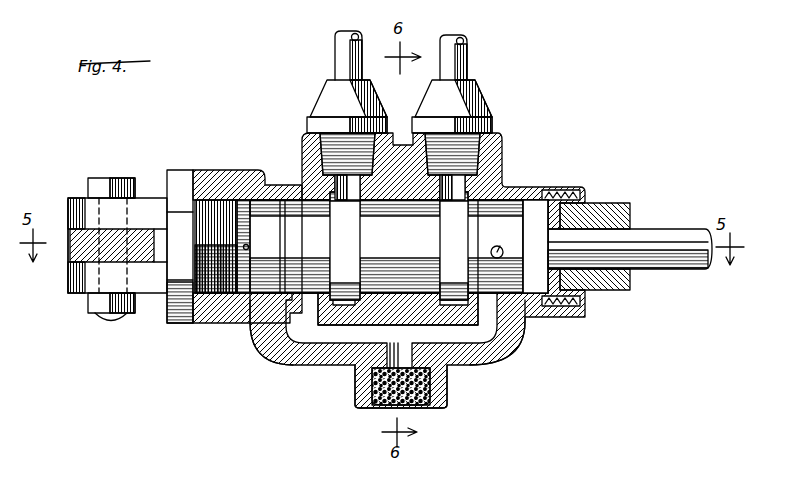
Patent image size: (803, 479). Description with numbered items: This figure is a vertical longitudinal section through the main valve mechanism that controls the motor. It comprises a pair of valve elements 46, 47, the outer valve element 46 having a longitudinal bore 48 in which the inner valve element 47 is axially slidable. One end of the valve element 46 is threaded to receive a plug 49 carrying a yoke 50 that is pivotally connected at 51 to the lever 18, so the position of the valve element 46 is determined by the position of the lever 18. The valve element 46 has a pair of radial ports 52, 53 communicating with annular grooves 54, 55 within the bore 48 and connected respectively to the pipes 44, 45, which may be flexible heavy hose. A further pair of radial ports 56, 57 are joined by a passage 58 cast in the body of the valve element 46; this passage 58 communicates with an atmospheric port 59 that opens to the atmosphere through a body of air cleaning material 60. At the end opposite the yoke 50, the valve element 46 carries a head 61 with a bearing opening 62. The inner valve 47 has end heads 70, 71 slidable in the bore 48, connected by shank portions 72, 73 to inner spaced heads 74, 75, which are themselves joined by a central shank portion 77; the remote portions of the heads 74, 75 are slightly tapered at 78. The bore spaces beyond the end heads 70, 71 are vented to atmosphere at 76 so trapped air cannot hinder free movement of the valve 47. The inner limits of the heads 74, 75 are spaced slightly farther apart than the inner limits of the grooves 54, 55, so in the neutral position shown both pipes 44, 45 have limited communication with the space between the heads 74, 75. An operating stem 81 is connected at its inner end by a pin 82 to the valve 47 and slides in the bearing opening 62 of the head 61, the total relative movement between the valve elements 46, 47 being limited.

The lever 18 is at (70, 232).
The pipe 44 is at (340, 55).
The pipe 45 is at (450, 71).
The valve element 46 is at (216, 172).
The valve element 47 is at (260, 312).
The longitudinal bore 48 is at (298, 212).
The plug 49 is at (222, 320).
The yoke 50 is at (150, 204).
The pivotal connection 51 is at (99, 184).
The radial port 52 is at (352, 184).
The radial port 53 is at (446, 197).
The annular groove 54 is at (345, 197).
The annular groove 55 is at (456, 205).
The radial port 56 is at (288, 340).
The radial port 57 is at (505, 334).
The passage 58 is at (468, 345).
The atmospheric port 59 is at (352, 376).
The air cleaning material 60 is at (410, 406).
The head 61 is at (586, 211).
The bearing opening 62 is at (589, 292).
The end head 70 is at (399, 246).
The end head 71 is at (513, 246).
The shank portion 72 is at (302, 245).
The shank portion 73 is at (497, 272).
The inner head 74 is at (352, 263).
The inner head 75 is at (454, 246).
The vent 76 is at (249, 247).
The central shank portion 77 is at (410, 300).
The tapered portion 78 is at (329, 241).
The operating stem 81 is at (665, 232).
The pin 82 is at (503, 243).